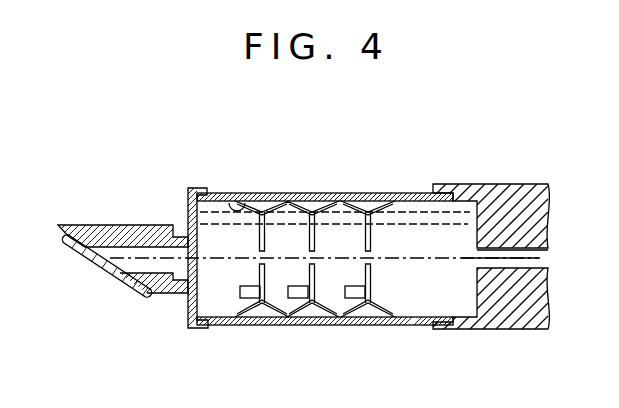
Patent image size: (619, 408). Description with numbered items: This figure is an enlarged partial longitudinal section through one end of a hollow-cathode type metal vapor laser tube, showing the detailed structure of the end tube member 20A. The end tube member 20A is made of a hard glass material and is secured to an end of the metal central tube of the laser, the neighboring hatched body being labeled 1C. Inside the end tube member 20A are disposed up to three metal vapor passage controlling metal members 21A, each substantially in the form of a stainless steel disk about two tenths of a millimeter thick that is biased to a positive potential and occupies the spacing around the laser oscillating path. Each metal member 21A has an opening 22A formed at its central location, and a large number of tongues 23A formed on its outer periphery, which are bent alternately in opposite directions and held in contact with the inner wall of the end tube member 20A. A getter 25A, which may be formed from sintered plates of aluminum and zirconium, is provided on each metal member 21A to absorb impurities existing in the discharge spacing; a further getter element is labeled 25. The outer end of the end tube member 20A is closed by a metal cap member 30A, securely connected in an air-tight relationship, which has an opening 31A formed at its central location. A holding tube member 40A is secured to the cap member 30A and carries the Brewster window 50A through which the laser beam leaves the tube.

The case 1C is at (549, 297).
The end tube member 20A is at (413, 193).
The metal vapor passage controlling metal member 21A is at (258, 290).
The opening 22A is at (281, 200).
The tongues 23A is at (229, 200).
The light emitting element 25 is at (240, 294).
The getter 25A is at (297, 299).
The cap member 30A is at (200, 188).
The opening 31A is at (158, 226).
The holding tube member 40A is at (100, 224).
The Brewster window 50A is at (100, 272).